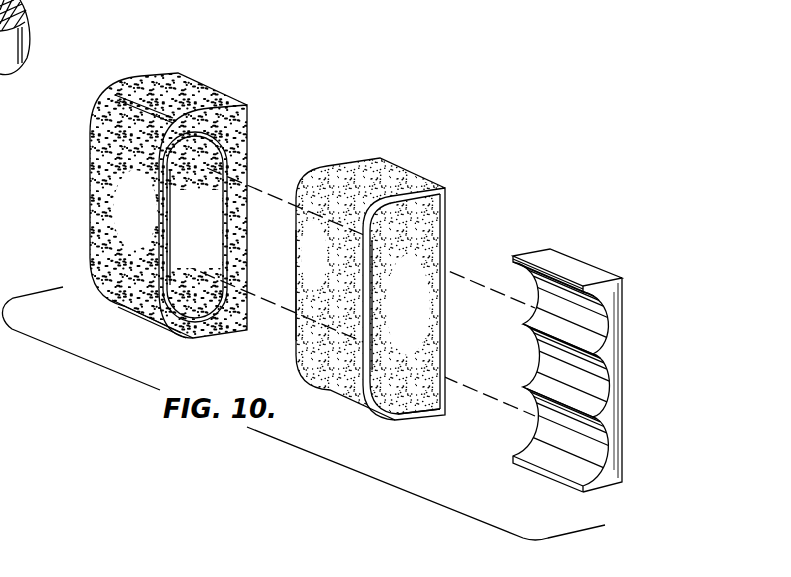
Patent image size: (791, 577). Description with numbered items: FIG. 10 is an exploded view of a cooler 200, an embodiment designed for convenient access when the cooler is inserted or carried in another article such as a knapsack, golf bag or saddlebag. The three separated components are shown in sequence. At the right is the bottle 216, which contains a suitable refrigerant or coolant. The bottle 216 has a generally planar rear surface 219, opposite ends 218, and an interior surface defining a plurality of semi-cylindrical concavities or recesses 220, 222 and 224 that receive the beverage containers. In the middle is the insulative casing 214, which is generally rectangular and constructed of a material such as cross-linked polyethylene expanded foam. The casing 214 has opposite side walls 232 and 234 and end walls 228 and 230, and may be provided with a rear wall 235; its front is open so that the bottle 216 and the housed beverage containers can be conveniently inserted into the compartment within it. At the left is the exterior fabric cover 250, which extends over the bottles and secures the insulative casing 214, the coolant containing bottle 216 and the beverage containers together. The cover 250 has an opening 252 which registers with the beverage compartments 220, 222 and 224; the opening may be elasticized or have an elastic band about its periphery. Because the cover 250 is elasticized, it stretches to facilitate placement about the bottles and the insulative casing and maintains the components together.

The cooler 200 is at (459, 140).
The insulative casing 214 is at (373, 288).
The bottle 216 is at (602, 351).
The opposite ends 218 is at (567, 262).
The rear surface 219 is at (625, 300).
The semi-cylindrical recess 220 is at (600, 335).
The semi-cylindrical recess 222 is at (600, 388).
The semi-cylindrical recess 224 is at (600, 458).
The end wall 228 is at (428, 193).
The end wall 230 is at (417, 415).
The side wall 232 is at (443, 246).
The side wall 234 is at (318, 326).
The rear wall 235 is at (365, 302).
The exterior fabric cover 250 is at (200, 102).
The opening 252 is at (213, 166).